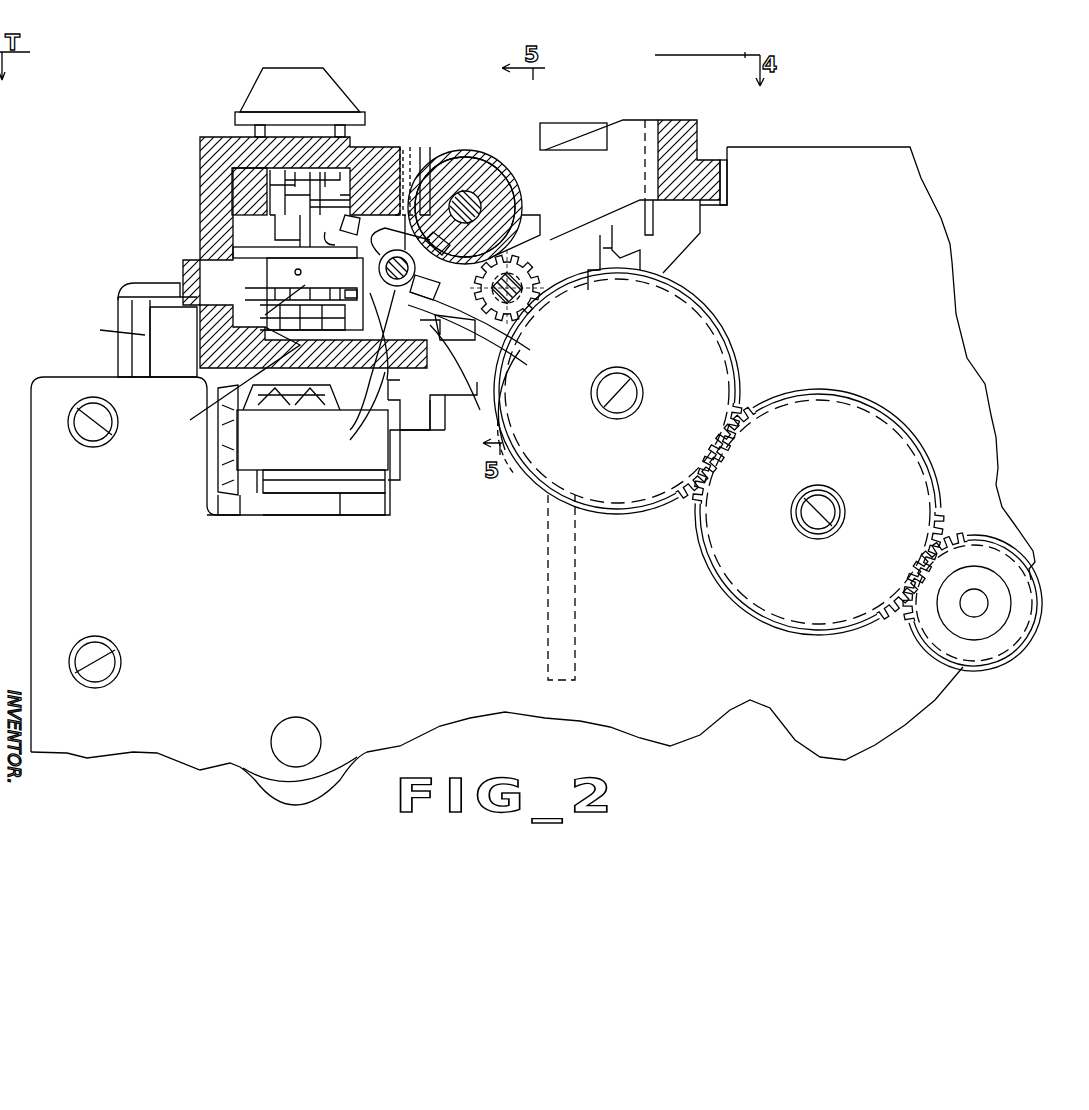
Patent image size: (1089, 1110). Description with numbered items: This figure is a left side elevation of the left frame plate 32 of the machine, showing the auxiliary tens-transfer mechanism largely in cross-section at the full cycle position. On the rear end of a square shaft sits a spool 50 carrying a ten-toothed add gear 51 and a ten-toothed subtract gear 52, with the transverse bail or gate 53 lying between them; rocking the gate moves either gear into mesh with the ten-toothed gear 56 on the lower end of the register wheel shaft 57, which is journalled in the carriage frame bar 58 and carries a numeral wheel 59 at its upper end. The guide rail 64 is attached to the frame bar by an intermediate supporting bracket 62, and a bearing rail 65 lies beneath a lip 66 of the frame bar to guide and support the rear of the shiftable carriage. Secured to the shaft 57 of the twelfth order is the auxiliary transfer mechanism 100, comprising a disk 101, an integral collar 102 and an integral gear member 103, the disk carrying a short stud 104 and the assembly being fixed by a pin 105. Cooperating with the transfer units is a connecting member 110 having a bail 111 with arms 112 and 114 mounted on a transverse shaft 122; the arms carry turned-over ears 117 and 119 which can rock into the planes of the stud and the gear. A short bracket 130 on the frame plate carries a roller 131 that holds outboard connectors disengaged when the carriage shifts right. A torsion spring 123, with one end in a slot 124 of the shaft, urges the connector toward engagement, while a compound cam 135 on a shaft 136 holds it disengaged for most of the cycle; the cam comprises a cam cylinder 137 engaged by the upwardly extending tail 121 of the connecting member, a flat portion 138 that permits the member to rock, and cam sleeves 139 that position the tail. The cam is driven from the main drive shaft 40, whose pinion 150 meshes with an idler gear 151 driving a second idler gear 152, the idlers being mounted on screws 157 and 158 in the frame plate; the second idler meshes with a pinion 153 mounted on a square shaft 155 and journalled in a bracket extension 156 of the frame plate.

The left frame plate 32 is at (942, 352).
The main drive shaft 40 is at (975, 603).
The spool 50 is at (255, 470).
The add gear 51 is at (370, 455).
The subtract gear 52 is at (225, 455).
The transverse bail or gate 53 is at (263, 483).
The ten-toothed gear 56 is at (280, 397).
The register wheel shaft 57 is at (275, 222).
The carriage frame bar 58 is at (212, 175).
The numeral wheel 59 is at (295, 92).
The intermediate supporting bracket 62 is at (605, 145).
The guide rail 64 is at (674, 130).
The bearing rail 65 is at (165, 345).
The lip 66 is at (180, 300).
The auxiliary transfer mechanism 100 is at (261, 280).
The disk or plate 101 is at (255, 253).
The integral collar 102 is at (205, 332).
The integral gear member 103 is at (235, 378).
The short stud 104 is at (360, 236).
The pin 105 is at (310, 292).
The connecting member 110 is at (318, 436).
The bail 111 is at (525, 345).
The mounting arm 112 is at (405, 250).
The arm 114 is at (430, 240).
The turned-over ear 117 is at (385, 250).
The turned-over ear 119 is at (332, 295).
The tail 121 is at (418, 263).
The transverse shaft 122 is at (425, 290).
The torsion spring 123 is at (465, 333).
The slot 124 is at (378, 304).
The short bracket 130 is at (528, 437).
The roller 131 is at (475, 340).
The compound cam 135 is at (510, 160).
The transverse shaft 136 is at (462, 190).
The cam cylinder 137 is at (482, 205).
The flat portion 138 is at (522, 226).
The cam sleeve 139 is at (515, 185).
The pinion 150 is at (928, 622).
The idler gear 151 is at (795, 415).
The second idler gear 152 is at (710, 340).
The pinion 153 is at (525, 295).
The square shaft 155 is at (515, 300).
The bracket extension 156 is at (545, 275).
The screw 157 is at (810, 520).
The screw 158 is at (617, 403).